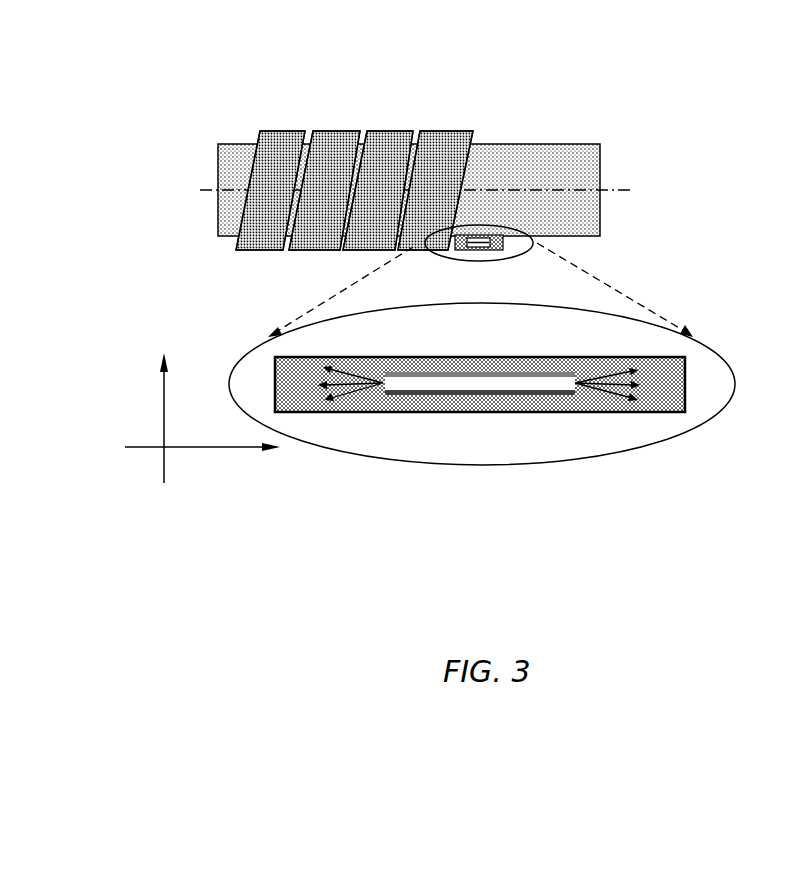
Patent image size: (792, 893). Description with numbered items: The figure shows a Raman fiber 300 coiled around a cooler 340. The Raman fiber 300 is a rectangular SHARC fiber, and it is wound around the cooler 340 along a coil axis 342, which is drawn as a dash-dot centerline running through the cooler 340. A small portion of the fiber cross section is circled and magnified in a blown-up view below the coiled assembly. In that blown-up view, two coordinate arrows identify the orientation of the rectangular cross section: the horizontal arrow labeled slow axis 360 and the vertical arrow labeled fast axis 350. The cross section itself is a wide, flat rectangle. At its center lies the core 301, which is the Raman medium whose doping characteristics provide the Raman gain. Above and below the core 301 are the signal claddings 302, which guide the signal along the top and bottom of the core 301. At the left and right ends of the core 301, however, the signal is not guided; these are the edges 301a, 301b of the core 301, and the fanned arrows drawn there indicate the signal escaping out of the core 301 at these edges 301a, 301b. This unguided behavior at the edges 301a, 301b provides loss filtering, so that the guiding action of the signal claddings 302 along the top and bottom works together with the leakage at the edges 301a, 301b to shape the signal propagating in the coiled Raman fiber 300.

The Raman fiber 300 is at (244, 132).
The cooler 340 is at (519, 150).
The coil axis 342 is at (646, 186).
The fast axis 350 is at (129, 418).
The slow axis 360 is at (202, 463).
The core 301 is at (392, 393).
The signal claddings 302 is at (468, 385).
The edge of the core 301a is at (360, 402).
The edge of the core 301b is at (587, 404).